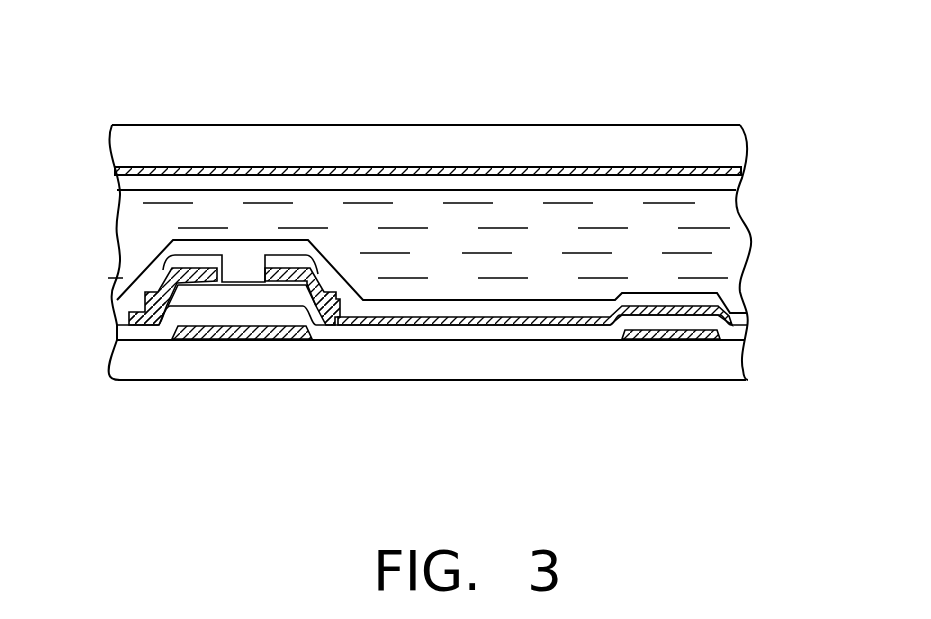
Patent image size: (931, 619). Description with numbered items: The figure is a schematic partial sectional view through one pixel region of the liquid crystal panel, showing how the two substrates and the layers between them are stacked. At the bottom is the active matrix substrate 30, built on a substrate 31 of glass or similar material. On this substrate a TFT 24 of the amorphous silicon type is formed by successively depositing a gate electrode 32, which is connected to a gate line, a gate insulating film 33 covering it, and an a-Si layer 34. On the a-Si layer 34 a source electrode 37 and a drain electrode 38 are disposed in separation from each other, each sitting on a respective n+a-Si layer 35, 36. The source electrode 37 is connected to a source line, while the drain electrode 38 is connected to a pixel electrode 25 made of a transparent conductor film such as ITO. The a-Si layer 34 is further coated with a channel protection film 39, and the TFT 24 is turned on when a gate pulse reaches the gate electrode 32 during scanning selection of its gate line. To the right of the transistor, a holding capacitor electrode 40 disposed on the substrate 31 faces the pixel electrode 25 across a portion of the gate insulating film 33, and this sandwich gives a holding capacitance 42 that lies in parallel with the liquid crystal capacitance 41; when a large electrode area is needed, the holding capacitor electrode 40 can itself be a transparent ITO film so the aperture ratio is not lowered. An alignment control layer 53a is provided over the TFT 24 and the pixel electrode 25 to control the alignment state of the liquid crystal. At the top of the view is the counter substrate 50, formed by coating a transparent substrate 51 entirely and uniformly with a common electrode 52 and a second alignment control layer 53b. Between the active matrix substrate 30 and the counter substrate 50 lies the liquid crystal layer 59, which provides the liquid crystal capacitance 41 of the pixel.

The TFT 24 is at (118, 475).
The pixel electrode 25 is at (502, 322).
The active matrix substrate 30 is at (92, 295).
The substrate 31 is at (536, 366).
The gate electrode 32 is at (237, 330).
The gate insulating film 33 is at (263, 318).
The a-Si layer 34 is at (217, 300).
The n+a-Si layer 35 is at (196, 287).
The n+a-Si layer 36 is at (292, 284).
The source electrode 37 is at (134, 327).
The drain electrode 38 is at (329, 312).
The channel protection film 39 is at (284, 245).
The holding capacitor electrode 40 is at (669, 336).
The liquid crystal capacitance 41 is at (825, 162).
The holding capacitance 42 is at (756, 303).
The counter substrate 50 is at (92, 123).
The transparent substrate 51 is at (537, 138).
The common electrode 52 is at (485, 172).
The alignment control layer 53a is at (576, 307).
The alignment control layer 53b is at (600, 181).
The liquid crystal layer 59 is at (137, 235).